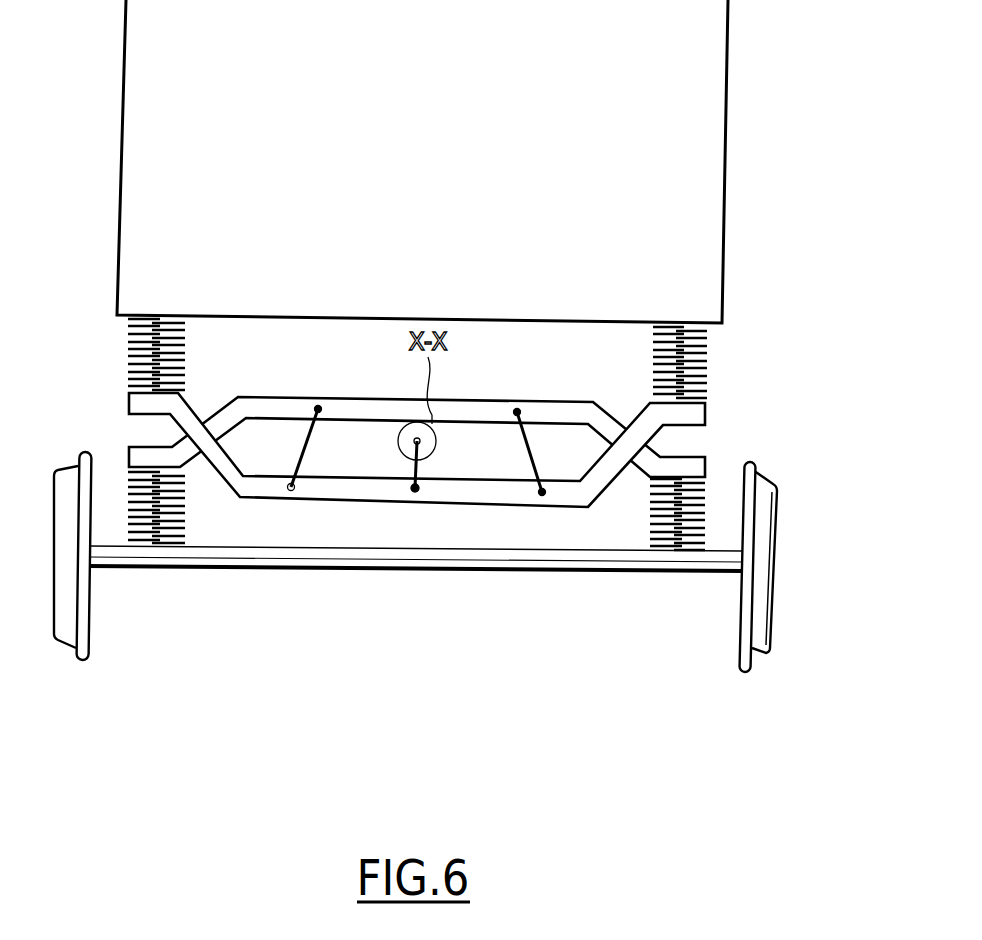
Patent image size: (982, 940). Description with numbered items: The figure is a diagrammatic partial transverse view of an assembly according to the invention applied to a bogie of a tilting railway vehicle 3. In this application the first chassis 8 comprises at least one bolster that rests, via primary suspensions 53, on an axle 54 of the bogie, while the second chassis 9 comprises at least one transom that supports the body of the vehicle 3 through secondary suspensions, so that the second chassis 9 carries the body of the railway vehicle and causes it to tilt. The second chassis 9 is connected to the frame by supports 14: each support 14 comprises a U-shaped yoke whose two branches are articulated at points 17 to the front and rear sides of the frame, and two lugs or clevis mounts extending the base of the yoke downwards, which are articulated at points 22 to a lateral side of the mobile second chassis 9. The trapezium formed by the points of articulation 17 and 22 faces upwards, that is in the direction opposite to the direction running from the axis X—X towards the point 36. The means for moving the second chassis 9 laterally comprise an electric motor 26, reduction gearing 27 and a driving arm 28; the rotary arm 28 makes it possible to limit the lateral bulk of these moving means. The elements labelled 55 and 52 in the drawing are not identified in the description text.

The tilting railway vehicle 3 is at (712, 240).
The upper spring 55 is at (128, 352).
The primary suspensions 53 is at (178, 515).
The second chassis 9 is at (708, 410).
The first chassis 8 is at (710, 463).
The support 14 is at (320, 423).
The points of articulation 17 is at (318, 405).
The points of articulation 22 is at (290, 492).
The driving arm 28 is at (440, 447).
The point 36 is at (418, 490).
The reduction gearing 27 is at (398, 462).
The electric motor 26 is at (437, 463).
The axle 54 is at (419, 575).
The wheel 52 is at (812, 482).